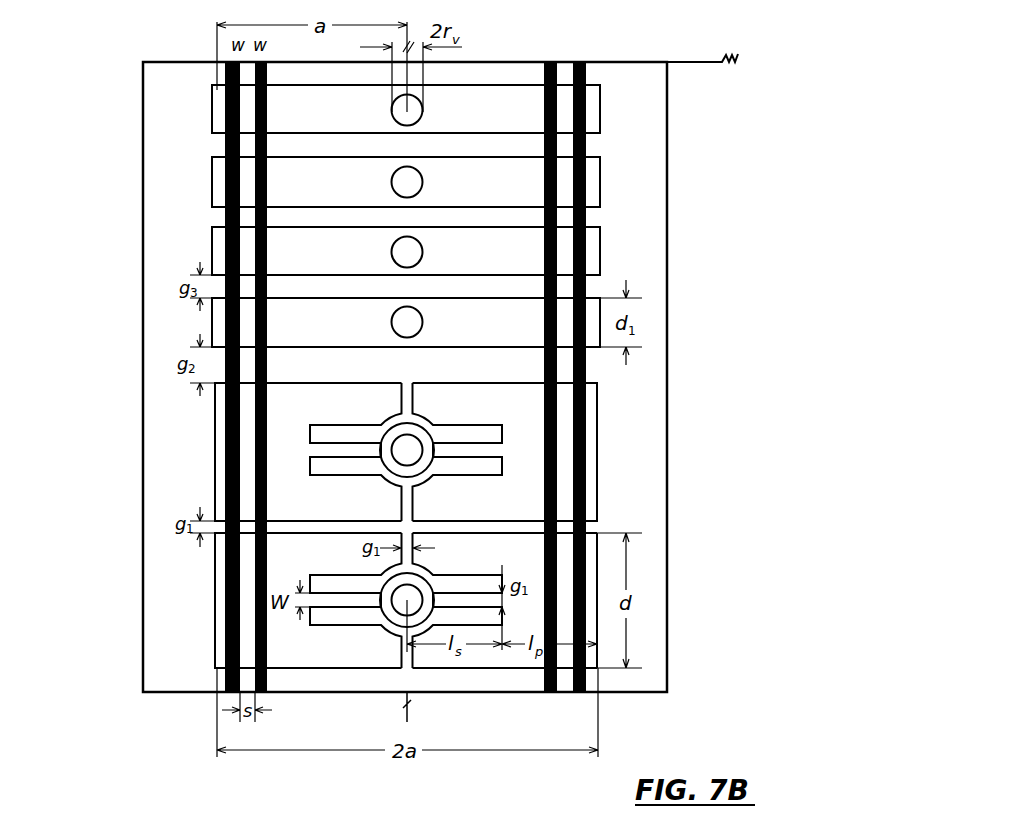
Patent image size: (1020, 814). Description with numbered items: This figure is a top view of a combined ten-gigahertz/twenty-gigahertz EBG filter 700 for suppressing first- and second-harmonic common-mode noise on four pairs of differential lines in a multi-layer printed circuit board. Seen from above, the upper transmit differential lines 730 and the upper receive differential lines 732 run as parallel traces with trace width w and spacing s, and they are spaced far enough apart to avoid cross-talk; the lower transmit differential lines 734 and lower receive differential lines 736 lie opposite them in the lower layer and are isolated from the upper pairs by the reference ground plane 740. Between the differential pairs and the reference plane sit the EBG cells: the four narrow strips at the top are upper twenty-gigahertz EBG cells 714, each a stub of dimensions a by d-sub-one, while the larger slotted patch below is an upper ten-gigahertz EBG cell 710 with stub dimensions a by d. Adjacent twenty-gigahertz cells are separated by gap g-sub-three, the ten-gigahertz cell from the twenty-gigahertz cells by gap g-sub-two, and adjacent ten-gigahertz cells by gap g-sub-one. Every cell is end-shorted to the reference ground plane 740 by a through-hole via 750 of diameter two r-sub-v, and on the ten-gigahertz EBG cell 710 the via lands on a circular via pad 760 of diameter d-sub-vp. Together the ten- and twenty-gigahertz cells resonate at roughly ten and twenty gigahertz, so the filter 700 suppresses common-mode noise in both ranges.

The 10-GHz EBG filter 700 is at (756, 673).
The upper 10-GHz EBG cell 710 is at (523, 555).
The upper 20-GHz EBG cell 714 is at (600, 200).
The upper pair of differential lines (TX) 730 is at (217, 102).
The upper pair of differential lines (RX) 732 is at (557, 82).
The lower pair of differential lines (TX) 734 is at (258, 628).
The lower pair of differential lines (RX) 736 is at (597, 638).
The reference ground plane Ref 1 740 is at (177, 606).
The through-hole via 750 is at (395, 598).
The via pad 760 is at (383, 612).